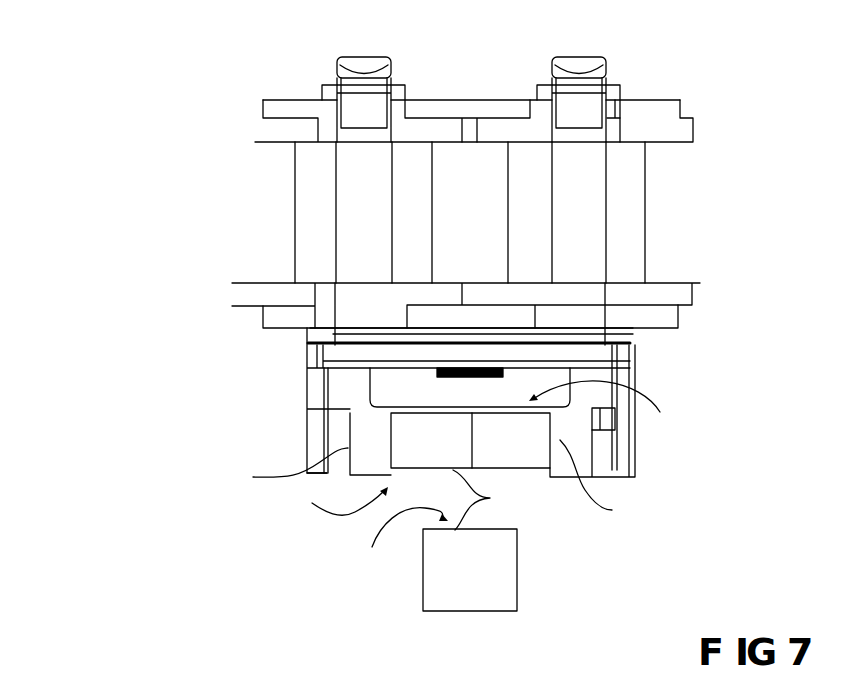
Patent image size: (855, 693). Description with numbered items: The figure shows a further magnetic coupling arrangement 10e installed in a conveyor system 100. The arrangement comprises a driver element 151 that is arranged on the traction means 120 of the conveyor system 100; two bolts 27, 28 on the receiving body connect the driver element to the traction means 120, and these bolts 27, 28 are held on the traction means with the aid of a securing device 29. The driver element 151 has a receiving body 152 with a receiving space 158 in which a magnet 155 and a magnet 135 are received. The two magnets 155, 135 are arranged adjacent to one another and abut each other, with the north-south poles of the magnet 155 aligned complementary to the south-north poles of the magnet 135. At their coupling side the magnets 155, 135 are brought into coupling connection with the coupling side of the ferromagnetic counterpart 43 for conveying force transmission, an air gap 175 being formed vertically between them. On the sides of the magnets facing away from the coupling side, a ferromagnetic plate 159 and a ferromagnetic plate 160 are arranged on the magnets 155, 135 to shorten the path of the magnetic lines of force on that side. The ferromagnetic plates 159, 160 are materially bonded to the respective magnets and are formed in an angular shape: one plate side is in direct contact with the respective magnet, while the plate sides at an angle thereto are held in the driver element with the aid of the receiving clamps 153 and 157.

The conveyor system 100 is at (113, 116).
The bolt 27 is at (347, 157).
The securing device 29 is at (614, 71).
The traction means 120 is at (345, 258).
The bolt 28 is at (625, 178).
The receiving body 152 is at (362, 357).
The receiving space 158 is at (541, 376).
The driver element 151 is at (278, 396).
The ferromagnetic plate 160 is at (362, 405).
The magnet 155 is at (410, 418).
The receiving clamp 153 is at (385, 445).
The magnet 135 is at (537, 452).
The receiving clamp 157 is at (623, 438).
The ferromagnetic plate 159 is at (583, 455).
The air gap 175 is at (500, 500).
The ferromagnetic counterpart 43 is at (507, 553).
The magnetic coupling arrangement 10e is at (238, 527).